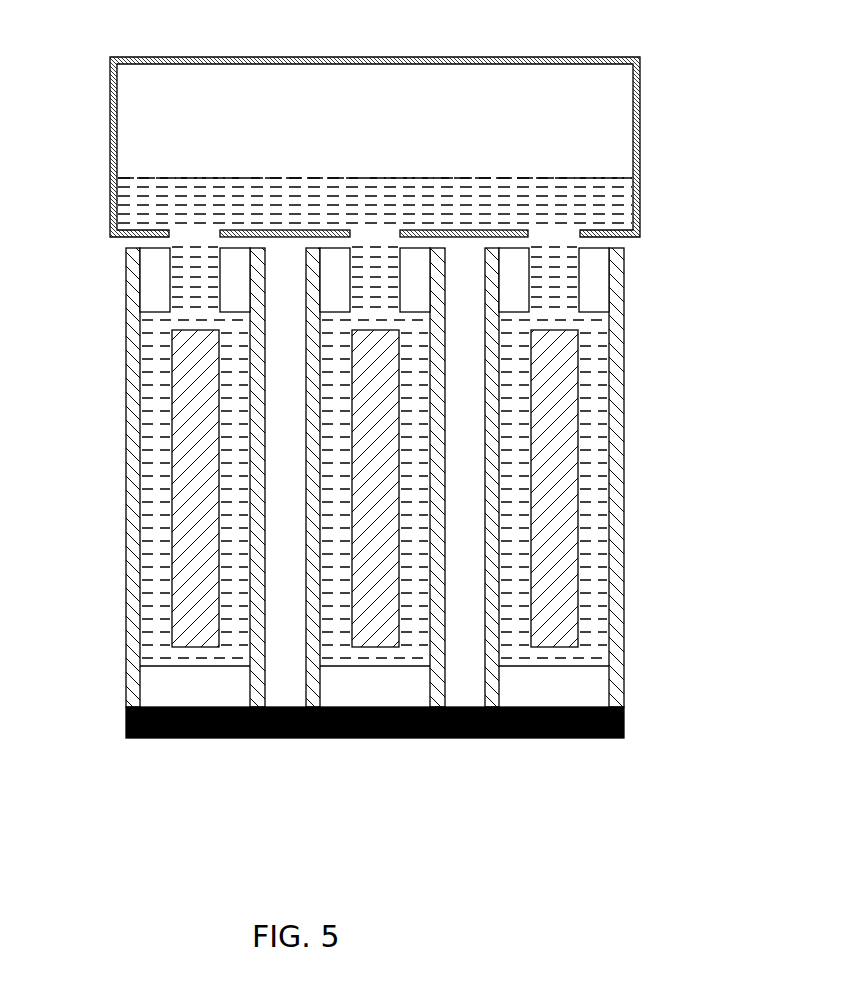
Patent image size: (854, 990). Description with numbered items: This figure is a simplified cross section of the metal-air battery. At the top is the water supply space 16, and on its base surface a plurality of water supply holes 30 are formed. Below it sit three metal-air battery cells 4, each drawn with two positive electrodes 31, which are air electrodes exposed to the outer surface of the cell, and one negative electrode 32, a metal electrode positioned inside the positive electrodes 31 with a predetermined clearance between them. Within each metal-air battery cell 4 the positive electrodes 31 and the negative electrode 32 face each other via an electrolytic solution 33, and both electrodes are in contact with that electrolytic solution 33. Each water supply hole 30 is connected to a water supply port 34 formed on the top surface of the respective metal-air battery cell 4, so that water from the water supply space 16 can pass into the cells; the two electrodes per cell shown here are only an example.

The metal-air battery cell 4 is at (307, 403).
The water supply space 16 is at (641, 128).
The water supply hole 30 is at (194, 243).
The positive electrode 31 is at (313, 523).
The negative electrode 32 is at (355, 467).
The electrolytic solution 33 is at (617, 209).
The water supply port 34 is at (170, 275).